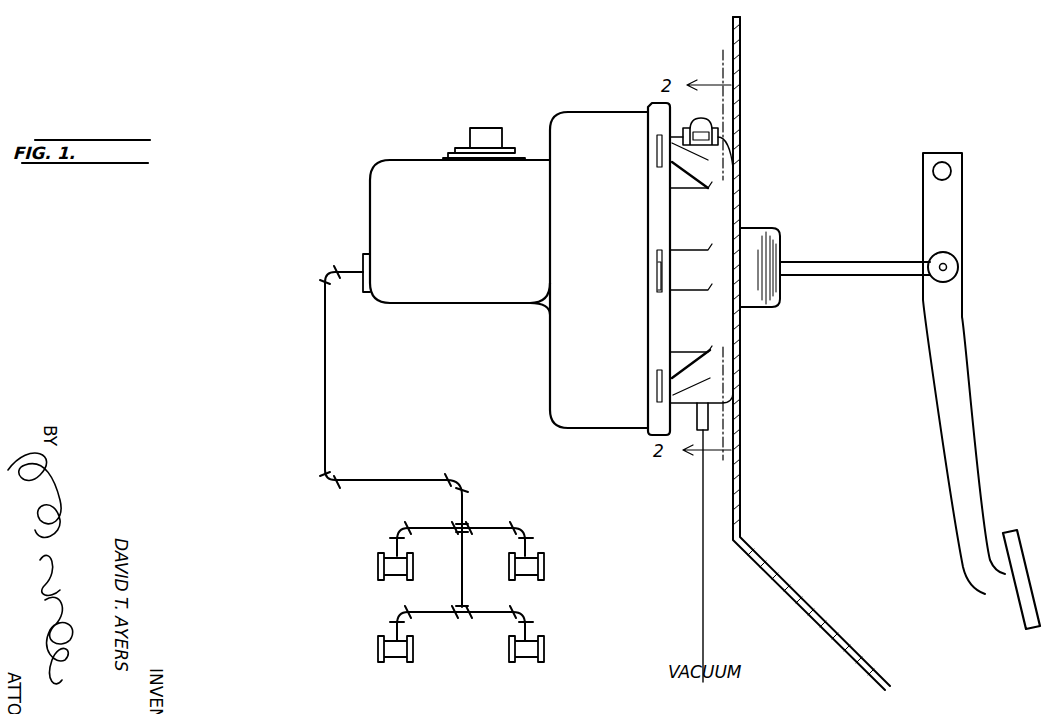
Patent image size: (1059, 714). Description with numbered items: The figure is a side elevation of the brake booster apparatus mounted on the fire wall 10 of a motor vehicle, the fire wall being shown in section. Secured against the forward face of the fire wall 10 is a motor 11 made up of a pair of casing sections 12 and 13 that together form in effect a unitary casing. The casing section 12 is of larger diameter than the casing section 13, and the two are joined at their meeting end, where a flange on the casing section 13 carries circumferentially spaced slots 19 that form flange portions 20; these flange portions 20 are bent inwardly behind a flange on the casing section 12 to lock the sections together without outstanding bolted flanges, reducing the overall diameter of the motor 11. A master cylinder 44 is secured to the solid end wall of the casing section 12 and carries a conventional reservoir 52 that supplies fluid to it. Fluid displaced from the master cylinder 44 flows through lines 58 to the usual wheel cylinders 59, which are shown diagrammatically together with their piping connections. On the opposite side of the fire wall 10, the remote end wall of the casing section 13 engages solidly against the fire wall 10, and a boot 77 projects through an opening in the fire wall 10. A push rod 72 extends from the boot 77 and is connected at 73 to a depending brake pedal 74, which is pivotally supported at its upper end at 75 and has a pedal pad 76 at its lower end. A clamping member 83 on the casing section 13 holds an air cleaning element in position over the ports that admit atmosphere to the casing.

The fire wall 10 is at (742, 108).
The motor 11 is at (662, 255).
The casing section 12 is at (586, 112).
The casing section 13 is at (690, 269).
The slots 19 is at (657, 258).
The flange portions 20 is at (657, 276).
The master cylinder 44 is at (456, 312).
The reservoir 52 is at (456, 215).
The lines 58 is at (325, 356).
The wheel cylinders 59 is at (509, 646).
The push rod 72 is at (850, 262).
The connection 73 is at (958, 267).
The brake pedal 74 is at (981, 384).
The pivotal support 75 is at (948, 172).
The pedal pad 76 is at (1013, 536).
The boot 77 is at (766, 232).
The clamping member 83 is at (700, 124).